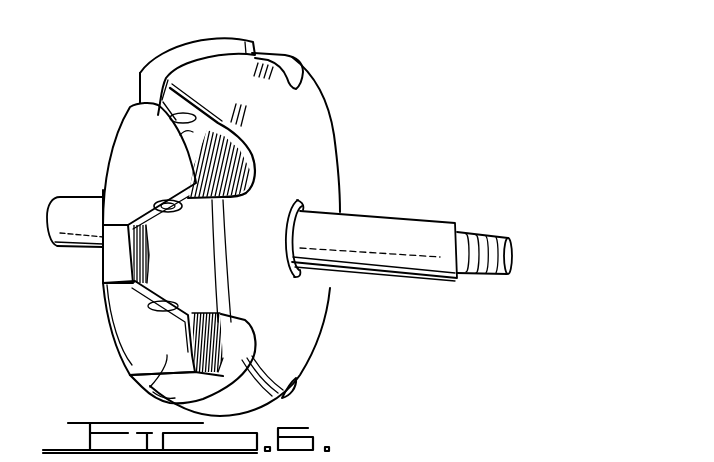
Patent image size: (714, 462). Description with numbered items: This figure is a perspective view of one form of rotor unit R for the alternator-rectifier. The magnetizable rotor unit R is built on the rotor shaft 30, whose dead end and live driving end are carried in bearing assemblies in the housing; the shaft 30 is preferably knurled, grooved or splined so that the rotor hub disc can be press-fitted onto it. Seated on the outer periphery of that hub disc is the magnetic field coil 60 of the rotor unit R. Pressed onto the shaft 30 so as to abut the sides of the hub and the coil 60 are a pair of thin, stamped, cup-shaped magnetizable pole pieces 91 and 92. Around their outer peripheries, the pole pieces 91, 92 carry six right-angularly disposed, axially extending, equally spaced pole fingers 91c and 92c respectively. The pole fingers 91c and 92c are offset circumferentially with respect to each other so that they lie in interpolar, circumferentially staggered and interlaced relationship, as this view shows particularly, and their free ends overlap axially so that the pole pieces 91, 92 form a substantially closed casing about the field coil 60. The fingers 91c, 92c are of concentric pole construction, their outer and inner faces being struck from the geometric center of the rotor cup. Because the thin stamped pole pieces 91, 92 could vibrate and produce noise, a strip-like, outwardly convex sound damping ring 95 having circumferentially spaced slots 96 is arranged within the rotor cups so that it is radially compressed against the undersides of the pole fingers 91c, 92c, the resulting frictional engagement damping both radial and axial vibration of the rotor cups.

The rotor unit R is at (337, 114).
The rotor shaft 30 is at (398, 229).
The magnetic field coil 60 is at (215, 165).
The rotor pole piece 91 is at (106, 151).
The pole fingers 91c is at (200, 134).
The rotor pole piece 92 is at (316, 353).
The pole fingers 92c is at (193, 72).
The sound damping ring 95 is at (165, 318).
The slots 96 is at (152, 212).